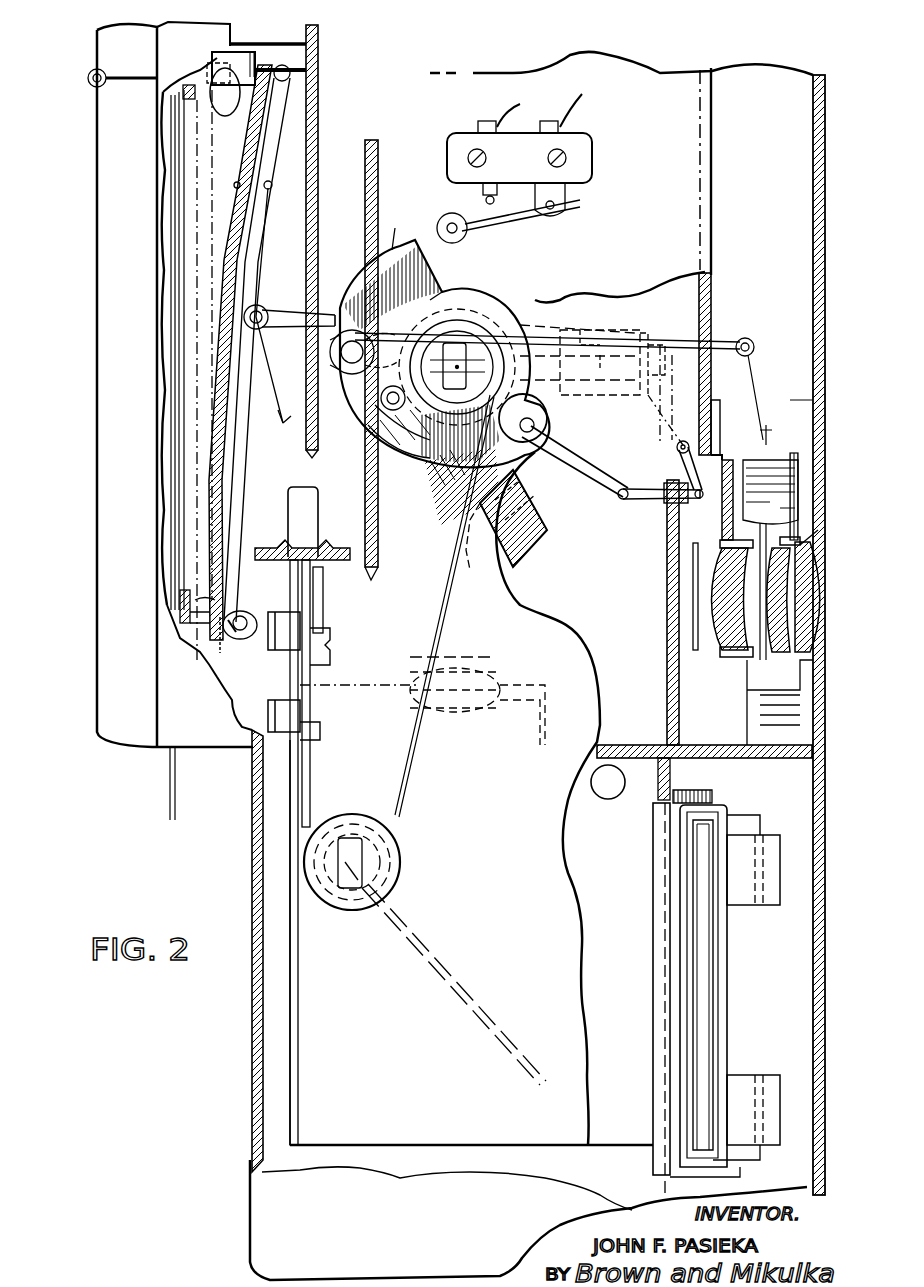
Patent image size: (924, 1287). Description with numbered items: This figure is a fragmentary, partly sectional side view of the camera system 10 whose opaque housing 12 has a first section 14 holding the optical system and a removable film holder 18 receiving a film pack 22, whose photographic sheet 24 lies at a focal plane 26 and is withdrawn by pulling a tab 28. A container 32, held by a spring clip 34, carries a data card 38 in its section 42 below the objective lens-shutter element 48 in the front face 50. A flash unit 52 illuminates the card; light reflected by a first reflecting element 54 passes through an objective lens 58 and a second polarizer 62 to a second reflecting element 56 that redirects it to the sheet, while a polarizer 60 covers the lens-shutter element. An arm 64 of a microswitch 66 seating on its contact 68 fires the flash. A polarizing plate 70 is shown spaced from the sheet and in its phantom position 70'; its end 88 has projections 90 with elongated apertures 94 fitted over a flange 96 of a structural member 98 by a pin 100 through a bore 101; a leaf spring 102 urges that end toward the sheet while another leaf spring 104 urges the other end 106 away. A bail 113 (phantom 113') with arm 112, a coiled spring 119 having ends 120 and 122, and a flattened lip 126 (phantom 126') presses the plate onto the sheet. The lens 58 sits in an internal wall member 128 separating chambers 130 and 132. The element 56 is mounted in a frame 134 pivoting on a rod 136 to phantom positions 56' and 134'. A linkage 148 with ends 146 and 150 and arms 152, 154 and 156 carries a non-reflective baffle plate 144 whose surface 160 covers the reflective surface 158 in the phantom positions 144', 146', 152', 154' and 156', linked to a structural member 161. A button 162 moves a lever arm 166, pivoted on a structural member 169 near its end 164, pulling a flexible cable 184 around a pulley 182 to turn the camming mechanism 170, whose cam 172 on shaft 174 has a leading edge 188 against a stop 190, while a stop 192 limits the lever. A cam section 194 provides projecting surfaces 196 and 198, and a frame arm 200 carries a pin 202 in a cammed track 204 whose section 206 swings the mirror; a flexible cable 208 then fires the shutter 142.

The camera system 10 is at (238, 860).
The opaque housing 12 is at (818, 128).
The first section 14 is at (820, 170).
The film holder 18 is at (84, 305).
The film pack 22 is at (190, 400).
The photographic sheet 24 is at (178, 226).
The focal plane 26 is at (190, 330).
The tab 28 is at (170, 792).
The container 32 is at (662, 985).
The spring clip 34 is at (745, 900).
The data card 38 is at (680, 912).
The container section 42 is at (707, 1003).
The objective lens-shutter element 48 is at (812, 520).
The front face 50 is at (818, 392).
The electronic flash unit 52 is at (590, 780).
The first light reflecting element 54 is at (462, 992).
The second light reflecting element 56 is at (450, 486).
The cam surface alternate position 56' is at (603, 344).
The objective lens 58 is at (490, 670).
The light polarizer 60 is at (693, 586).
The second light polarizer 62 is at (470, 656).
The microswitch arm 64 is at (515, 215).
The microswitch 66 is at (582, 150).
The contact 68 is at (482, 195).
The polarizing plate 70 is at (213, 79).
The lamp edge 70' is at (165, 331).
The polarizing plate end 88 is at (200, 622).
The projections 90 is at (250, 618).
The elongated aperture 94 is at (240, 610).
The flange 96 is at (205, 600).
The structural member 98 is at (200, 637).
The pin 100 is at (231, 640).
The bore 101 is at (248, 622).
The leaf spring 102 is at (213, 660).
The leaf spring 104 is at (240, 82).
The polarizing plate other end 106 is at (318, 40).
The bail arm 112 is at (275, 305).
The bail 113 is at (286, 343).
The lever end 113' is at (210, 53).
The coiled spring 119 is at (260, 355).
The spring end 120 is at (281, 425).
The spring end 122 is at (280, 200).
The flattened lip 126 is at (277, 352).
The plate 126' is at (349, 360).
The internal wall member 128 is at (370, 680).
The chamber 130 is at (420, 599).
The chamber 132 is at (640, 745).
The frame 134 is at (521, 518).
The cam block alternate position 134' is at (665, 341).
The rod 136 is at (330, 352).
The shutter 142 is at (760, 555).
The light baffle plate 144 is at (644, 612).
The support alternate position 144' is at (640, 420).
The linkage end 146 is at (332, 398).
The pin path 146' is at (457, 344).
The linkage 148 is at (612, 511).
The linkage other end 150 is at (675, 447).
The linkage arm 152 is at (612, 462).
The link arm alternate position 152' is at (580, 320).
The linkage arm 154 is at (662, 468).
The link alternate position 154' is at (679, 379).
The linkage arm 156 is at (730, 432).
The spring 156' is at (736, 400).
The reflective surface 158 is at (467, 545).
The baffle plate surface 160 is at (678, 685).
The structural member 161 is at (715, 402).
The button 162 is at (300, 490).
The lever arm end 164 is at (310, 603).
The lever arm 166 is at (300, 685).
The structural member 169 is at (295, 780).
The camming mechanism 170 is at (411, 230).
The cam 172 is at (490, 330).
The shaft 174 is at (485, 320).
The pulley 182 is at (345, 905).
The flexible cable 184 is at (440, 637).
The leading edge 188 is at (545, 410).
The stop 190 is at (535, 426).
The stop 192 is at (320, 723).
The cam section 194 is at (390, 229).
The projecting surface 196 is at (340, 322).
The projecting surface 198 is at (425, 258).
The frame arm 200 is at (360, 365).
The pin 202 is at (380, 412).
The cammed track 204 is at (360, 432).
The track section 206 is at (440, 475).
The flexible cable 208 is at (720, 345).